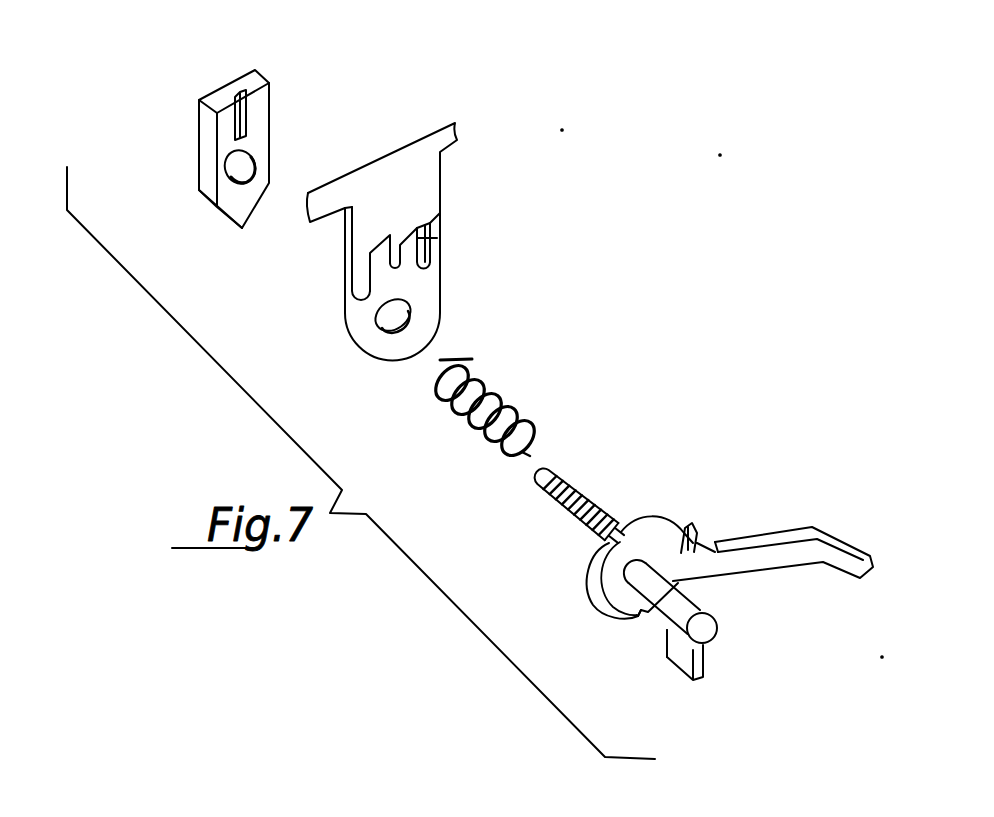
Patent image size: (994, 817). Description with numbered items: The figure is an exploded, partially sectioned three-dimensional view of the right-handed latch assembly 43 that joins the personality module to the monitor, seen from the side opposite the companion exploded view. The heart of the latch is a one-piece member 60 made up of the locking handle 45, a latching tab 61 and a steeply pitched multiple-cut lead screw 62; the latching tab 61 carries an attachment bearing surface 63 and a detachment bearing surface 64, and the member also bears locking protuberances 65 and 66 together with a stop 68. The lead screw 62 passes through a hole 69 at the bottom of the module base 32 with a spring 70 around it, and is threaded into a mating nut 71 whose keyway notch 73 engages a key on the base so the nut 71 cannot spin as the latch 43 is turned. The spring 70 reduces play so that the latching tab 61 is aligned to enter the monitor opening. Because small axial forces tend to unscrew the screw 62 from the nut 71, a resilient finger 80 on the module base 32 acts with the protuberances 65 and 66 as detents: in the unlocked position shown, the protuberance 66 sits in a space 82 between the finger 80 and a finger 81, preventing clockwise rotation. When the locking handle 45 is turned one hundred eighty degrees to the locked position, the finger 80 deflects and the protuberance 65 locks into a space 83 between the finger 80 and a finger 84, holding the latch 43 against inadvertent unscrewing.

The module base 32 is at (429, 264).
The latch assembly 43 is at (538, 592).
The locking handle 45 is at (833, 543).
The one-piece member 60 is at (687, 450).
The latching tab 61 is at (680, 677).
The multiple-cut lead screw 62 is at (590, 488).
The attachment bearing surface 63 is at (663, 648).
The detachment bearing surface 64 is at (703, 633).
The locking protuberance 65 is at (638, 618).
The locking protuberance 66 is at (623, 517).
The stop 68 is at (690, 527).
The hole 69 is at (407, 327).
The spring 70 is at (475, 362).
The mating nut 71 is at (253, 142).
The keyway notch 73 is at (233, 100).
The finger 80 is at (397, 258).
The finger 81 is at (353, 287).
The space 82 is at (378, 258).
The space 83 is at (421, 222).
The finger 84 is at (436, 266).